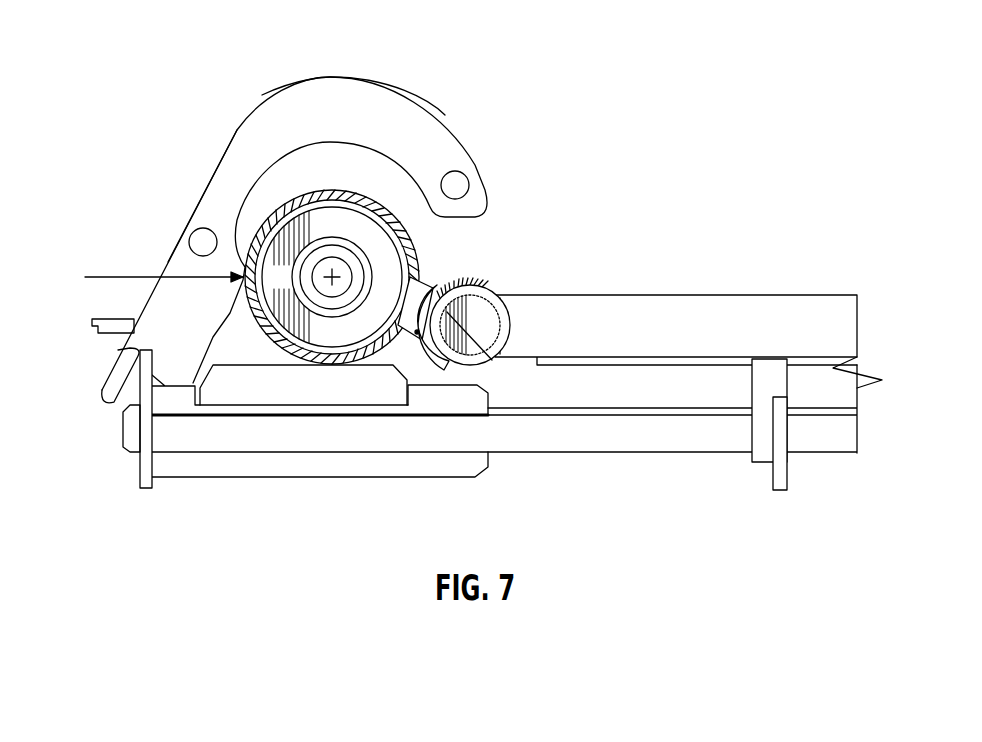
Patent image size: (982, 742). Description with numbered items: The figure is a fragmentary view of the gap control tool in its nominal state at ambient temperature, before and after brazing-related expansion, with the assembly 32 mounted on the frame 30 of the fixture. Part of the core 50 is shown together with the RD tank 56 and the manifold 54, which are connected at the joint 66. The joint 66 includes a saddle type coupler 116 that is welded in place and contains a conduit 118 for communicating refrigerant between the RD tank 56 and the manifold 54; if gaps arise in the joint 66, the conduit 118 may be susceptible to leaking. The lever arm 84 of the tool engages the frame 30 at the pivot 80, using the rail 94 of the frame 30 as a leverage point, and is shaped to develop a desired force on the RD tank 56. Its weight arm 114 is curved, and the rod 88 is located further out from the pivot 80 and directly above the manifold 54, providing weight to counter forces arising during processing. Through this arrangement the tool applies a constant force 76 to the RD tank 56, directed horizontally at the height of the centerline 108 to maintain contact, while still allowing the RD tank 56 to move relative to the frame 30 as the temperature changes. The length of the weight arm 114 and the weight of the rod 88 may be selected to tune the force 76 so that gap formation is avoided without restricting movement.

The frame 30 is at (678, 433).
The assembly 32 is at (326, 197).
The core 50 is at (698, 341).
The manifold 54 is at (487, 293).
The RD tank 56 is at (287, 363).
The joint 66 is at (417, 360).
The force 76 is at (113, 277).
The pivot 80 is at (113, 351).
The lever arm 84 is at (245, 147).
The rod 88 is at (460, 187).
The rail 94 is at (147, 412).
The centerline 108 is at (336, 277).
The weight arm 114 is at (348, 98).
The saddle type coupler 116 is at (482, 283).
The conduit 118 is at (492, 360).